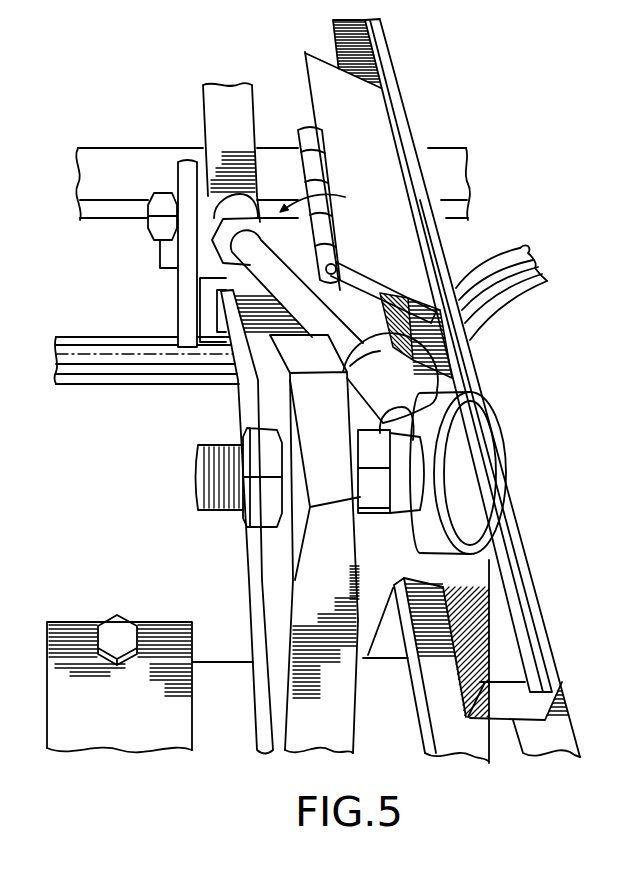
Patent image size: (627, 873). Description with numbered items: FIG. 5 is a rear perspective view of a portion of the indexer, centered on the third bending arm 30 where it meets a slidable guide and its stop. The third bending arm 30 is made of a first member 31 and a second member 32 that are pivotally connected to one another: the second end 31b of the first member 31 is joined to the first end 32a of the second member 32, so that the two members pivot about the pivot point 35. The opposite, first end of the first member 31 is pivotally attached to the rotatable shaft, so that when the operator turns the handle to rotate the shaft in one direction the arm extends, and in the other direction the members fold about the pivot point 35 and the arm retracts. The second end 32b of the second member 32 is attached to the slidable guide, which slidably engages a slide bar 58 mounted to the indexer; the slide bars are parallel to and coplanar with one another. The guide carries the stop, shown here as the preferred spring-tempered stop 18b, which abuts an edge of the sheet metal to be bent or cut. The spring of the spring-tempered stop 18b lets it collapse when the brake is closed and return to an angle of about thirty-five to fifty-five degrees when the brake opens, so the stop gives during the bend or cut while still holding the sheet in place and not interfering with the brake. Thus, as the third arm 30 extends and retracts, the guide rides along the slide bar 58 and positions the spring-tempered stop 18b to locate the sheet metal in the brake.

The slide bar 58 is at (222, 108).
The second end of second member 32b is at (234, 211).
The spring-tempered stop 18b is at (350, 123).
The second member 32 is at (273, 283).
The first end of second member 32a is at (405, 383).
The third bending arm 30 is at (282, 397).
The pivot point 35 is at (267, 456).
The second end of first member 31b is at (313, 567).
The first member 31 is at (300, 723).